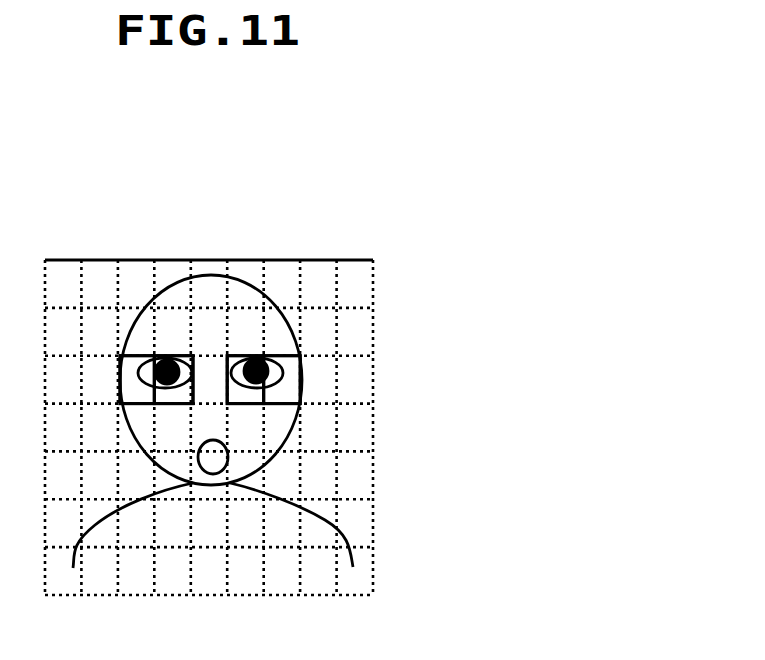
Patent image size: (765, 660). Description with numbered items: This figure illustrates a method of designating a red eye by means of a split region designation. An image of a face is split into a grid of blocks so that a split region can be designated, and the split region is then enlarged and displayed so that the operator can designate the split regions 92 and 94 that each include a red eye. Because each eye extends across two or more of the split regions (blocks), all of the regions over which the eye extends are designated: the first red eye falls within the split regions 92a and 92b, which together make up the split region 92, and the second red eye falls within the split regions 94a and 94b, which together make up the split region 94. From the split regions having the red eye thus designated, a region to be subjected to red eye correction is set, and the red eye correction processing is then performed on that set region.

The split region 92 is at (260, 178).
The split region 92a is at (138, 356).
The split region 92b is at (175, 360).
The split region 94 is at (453, 198).
The split region 94a is at (253, 356).
The split region 94b is at (285, 387).